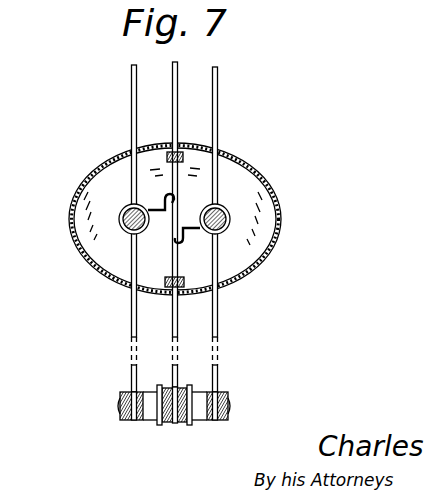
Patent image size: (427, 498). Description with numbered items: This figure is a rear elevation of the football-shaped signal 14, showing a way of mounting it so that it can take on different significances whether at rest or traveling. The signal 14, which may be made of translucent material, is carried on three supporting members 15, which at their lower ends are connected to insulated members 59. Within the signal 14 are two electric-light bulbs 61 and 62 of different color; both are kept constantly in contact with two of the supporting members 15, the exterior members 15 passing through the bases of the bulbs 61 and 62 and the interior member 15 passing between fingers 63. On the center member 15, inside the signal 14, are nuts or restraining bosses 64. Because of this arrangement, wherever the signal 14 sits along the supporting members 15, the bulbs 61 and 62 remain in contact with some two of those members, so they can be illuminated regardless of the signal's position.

The signal 14 is at (281, 222).
The supporting members 15 is at (212, 107).
The insulated members 59 is at (218, 421).
The electric-light bulb 61 is at (121, 212).
The electric-light bulb 62 is at (227, 210).
The fingers 63 is at (162, 213).
The nuts or restraining bosses 64 is at (184, 154).